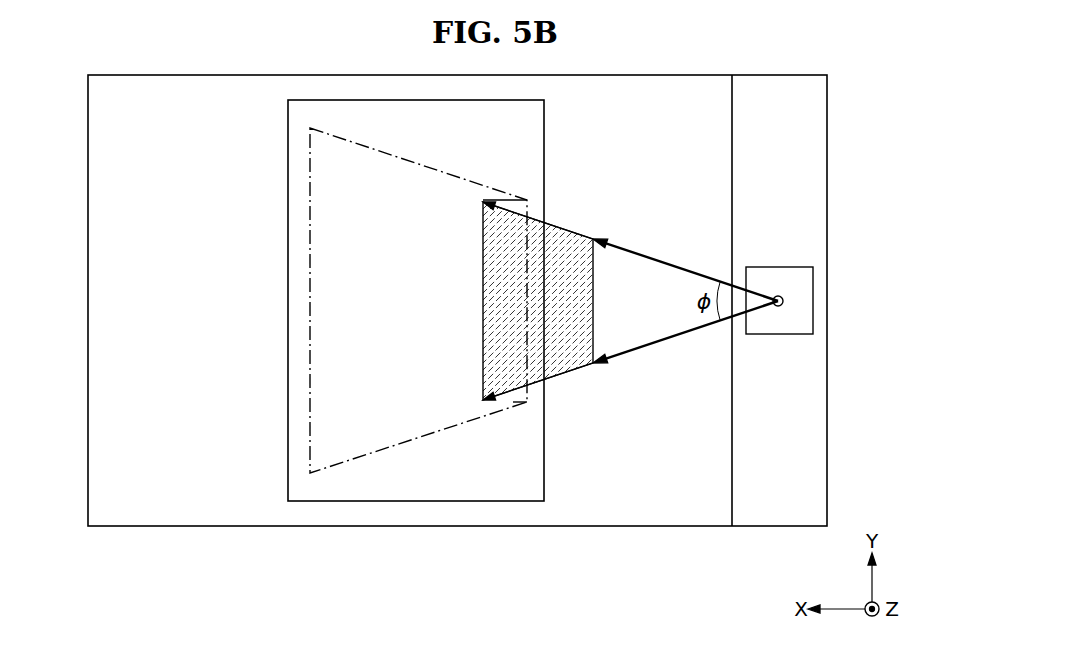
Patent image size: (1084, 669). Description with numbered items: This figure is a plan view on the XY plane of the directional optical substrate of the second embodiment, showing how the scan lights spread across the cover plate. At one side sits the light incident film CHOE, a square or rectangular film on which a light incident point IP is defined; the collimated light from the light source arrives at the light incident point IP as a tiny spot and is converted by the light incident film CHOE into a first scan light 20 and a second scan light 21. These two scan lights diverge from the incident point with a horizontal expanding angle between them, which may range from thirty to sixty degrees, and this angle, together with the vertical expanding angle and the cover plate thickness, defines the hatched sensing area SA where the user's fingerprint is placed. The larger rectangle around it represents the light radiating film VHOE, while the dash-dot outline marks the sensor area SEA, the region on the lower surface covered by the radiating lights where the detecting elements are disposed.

The first scan light 20 is at (661, 261).
The second scan light 21 is at (562, 228).
The light radiating film VHOE is at (333, 502).
The sensor area SEA is at (420, 438).
The sensing area SA is at (515, 362).
The light incident film CHOE is at (813, 272).
The light incident point IP is at (784, 300).